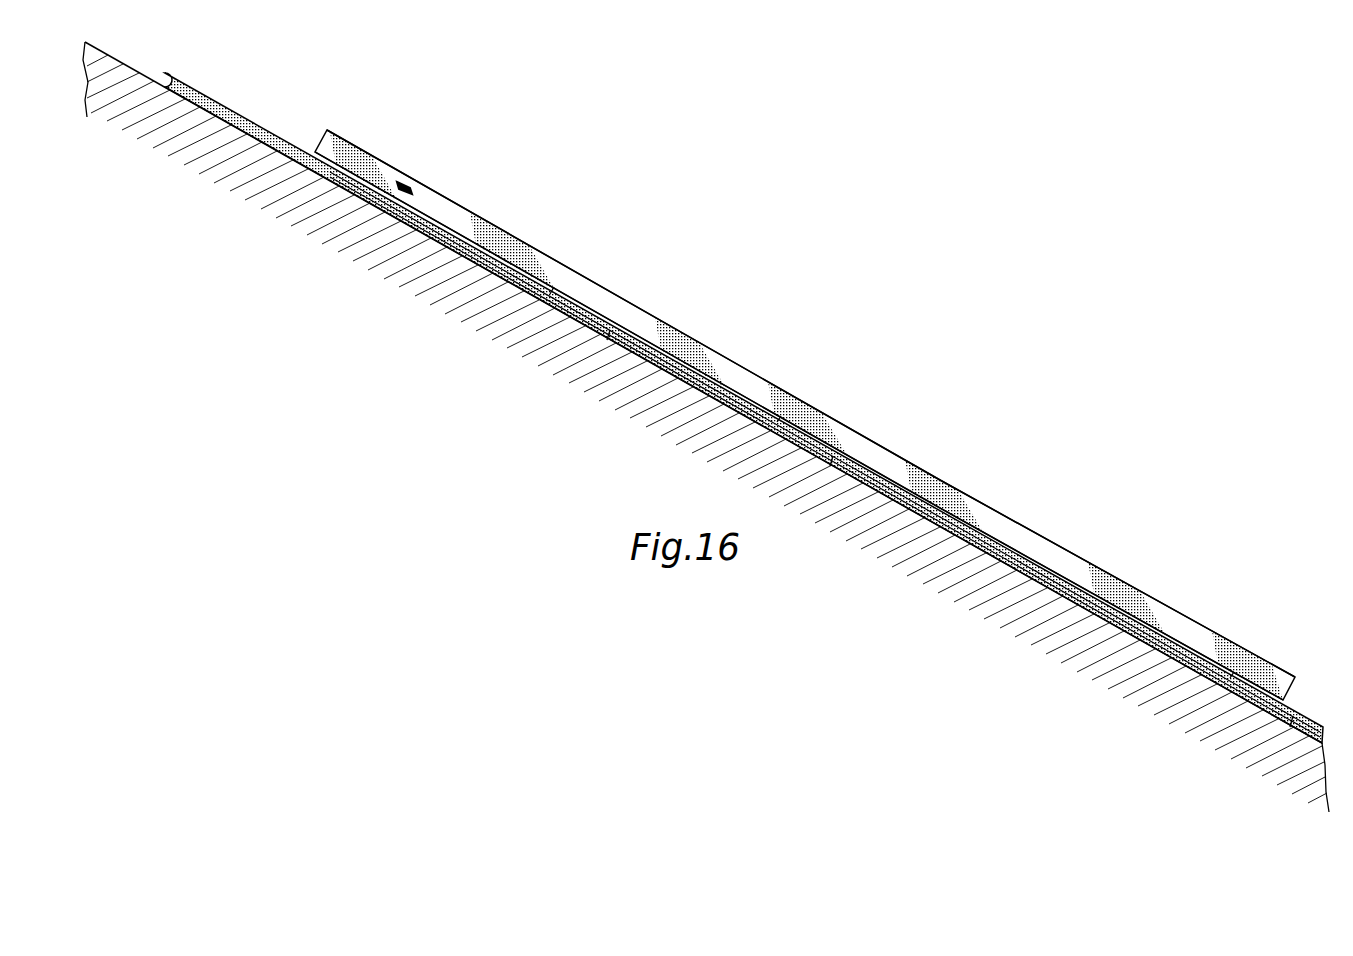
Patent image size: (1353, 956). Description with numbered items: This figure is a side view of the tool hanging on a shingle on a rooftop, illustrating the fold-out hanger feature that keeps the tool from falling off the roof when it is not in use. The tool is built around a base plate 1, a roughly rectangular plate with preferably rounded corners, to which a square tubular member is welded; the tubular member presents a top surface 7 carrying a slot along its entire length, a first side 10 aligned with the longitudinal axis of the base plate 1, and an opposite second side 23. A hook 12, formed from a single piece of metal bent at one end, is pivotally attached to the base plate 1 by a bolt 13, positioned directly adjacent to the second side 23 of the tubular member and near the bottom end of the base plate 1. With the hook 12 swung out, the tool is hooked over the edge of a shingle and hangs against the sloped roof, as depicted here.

The base plate 1 is at (595, 311).
The top surface of the tubular member 7 is at (726, 354).
The first side of the tubular member 10 is at (539, 262).
The hook 12 is at (289, 133).
The bolt 13 is at (407, 182).
The second side of the tubular member 23 is at (588, 376).